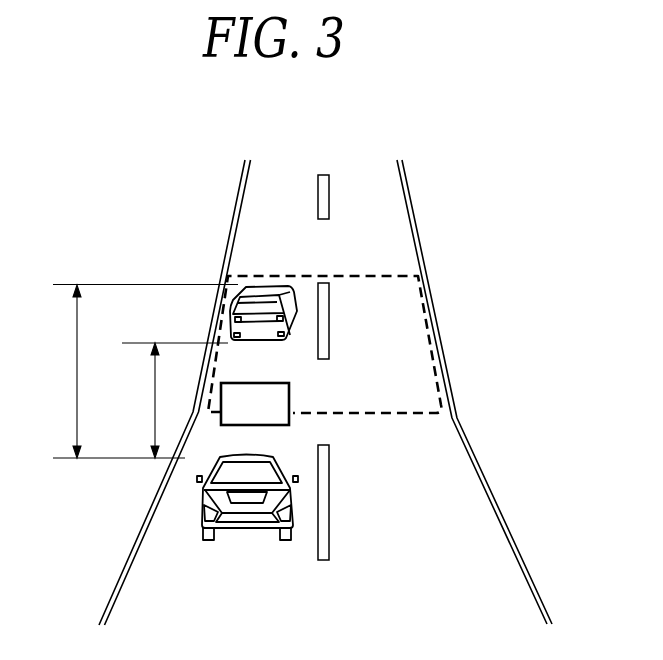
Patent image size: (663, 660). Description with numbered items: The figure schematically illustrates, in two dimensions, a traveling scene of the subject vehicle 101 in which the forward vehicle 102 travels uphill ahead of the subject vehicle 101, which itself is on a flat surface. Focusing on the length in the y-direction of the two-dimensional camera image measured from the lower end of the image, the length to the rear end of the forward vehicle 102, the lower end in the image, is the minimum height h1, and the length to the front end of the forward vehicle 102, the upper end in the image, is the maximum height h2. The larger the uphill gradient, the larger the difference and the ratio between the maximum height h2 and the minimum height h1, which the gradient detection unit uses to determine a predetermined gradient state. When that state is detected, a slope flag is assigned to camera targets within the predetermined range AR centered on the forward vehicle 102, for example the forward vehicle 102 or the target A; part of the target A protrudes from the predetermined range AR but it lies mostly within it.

The subject vehicle 101 is at (233, 530).
The forward vehicle 102 is at (267, 275).
The target A is at (289, 419).
The predetermined range AR is at (400, 308).
The minimum height h1 is at (173, 400).
The maximum height h2 is at (139, 372).